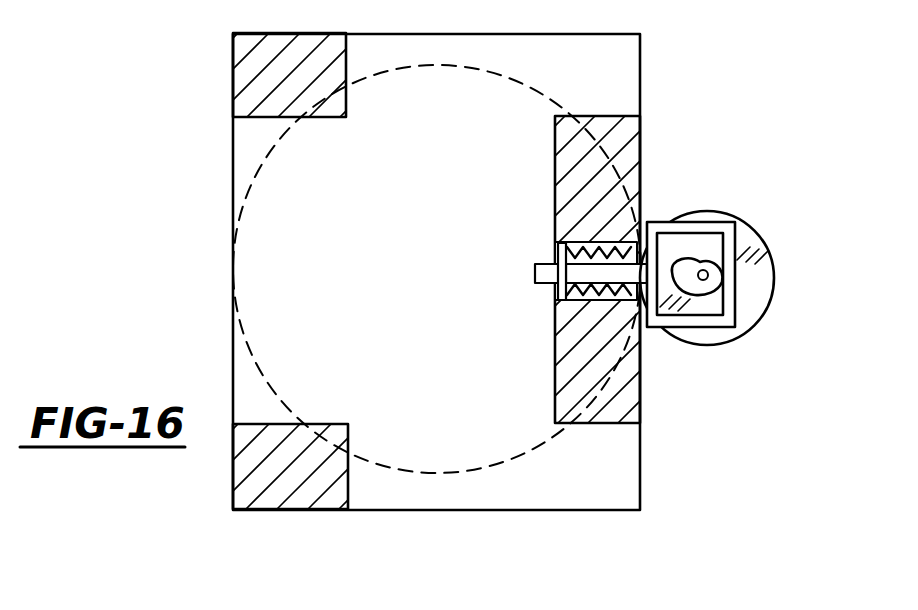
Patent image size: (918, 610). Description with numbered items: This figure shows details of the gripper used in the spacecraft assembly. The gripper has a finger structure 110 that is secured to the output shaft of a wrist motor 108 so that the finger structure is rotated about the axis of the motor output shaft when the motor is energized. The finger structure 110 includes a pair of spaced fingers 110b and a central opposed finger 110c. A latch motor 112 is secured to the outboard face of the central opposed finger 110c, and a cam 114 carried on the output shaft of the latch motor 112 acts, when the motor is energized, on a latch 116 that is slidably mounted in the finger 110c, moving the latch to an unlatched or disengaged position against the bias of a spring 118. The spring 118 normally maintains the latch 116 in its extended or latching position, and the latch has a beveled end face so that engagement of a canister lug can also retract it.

The wrist motor 108 is at (553, 437).
The finger structure 110 is at (218, 213).
The spaced fingers 110b is at (247, 52).
The central opposed finger 110c is at (606, 118).
The latch motor 112 is at (768, 273).
The cam 114 is at (694, 262).
The latch 116 is at (534, 275).
The spring 118 is at (590, 243).